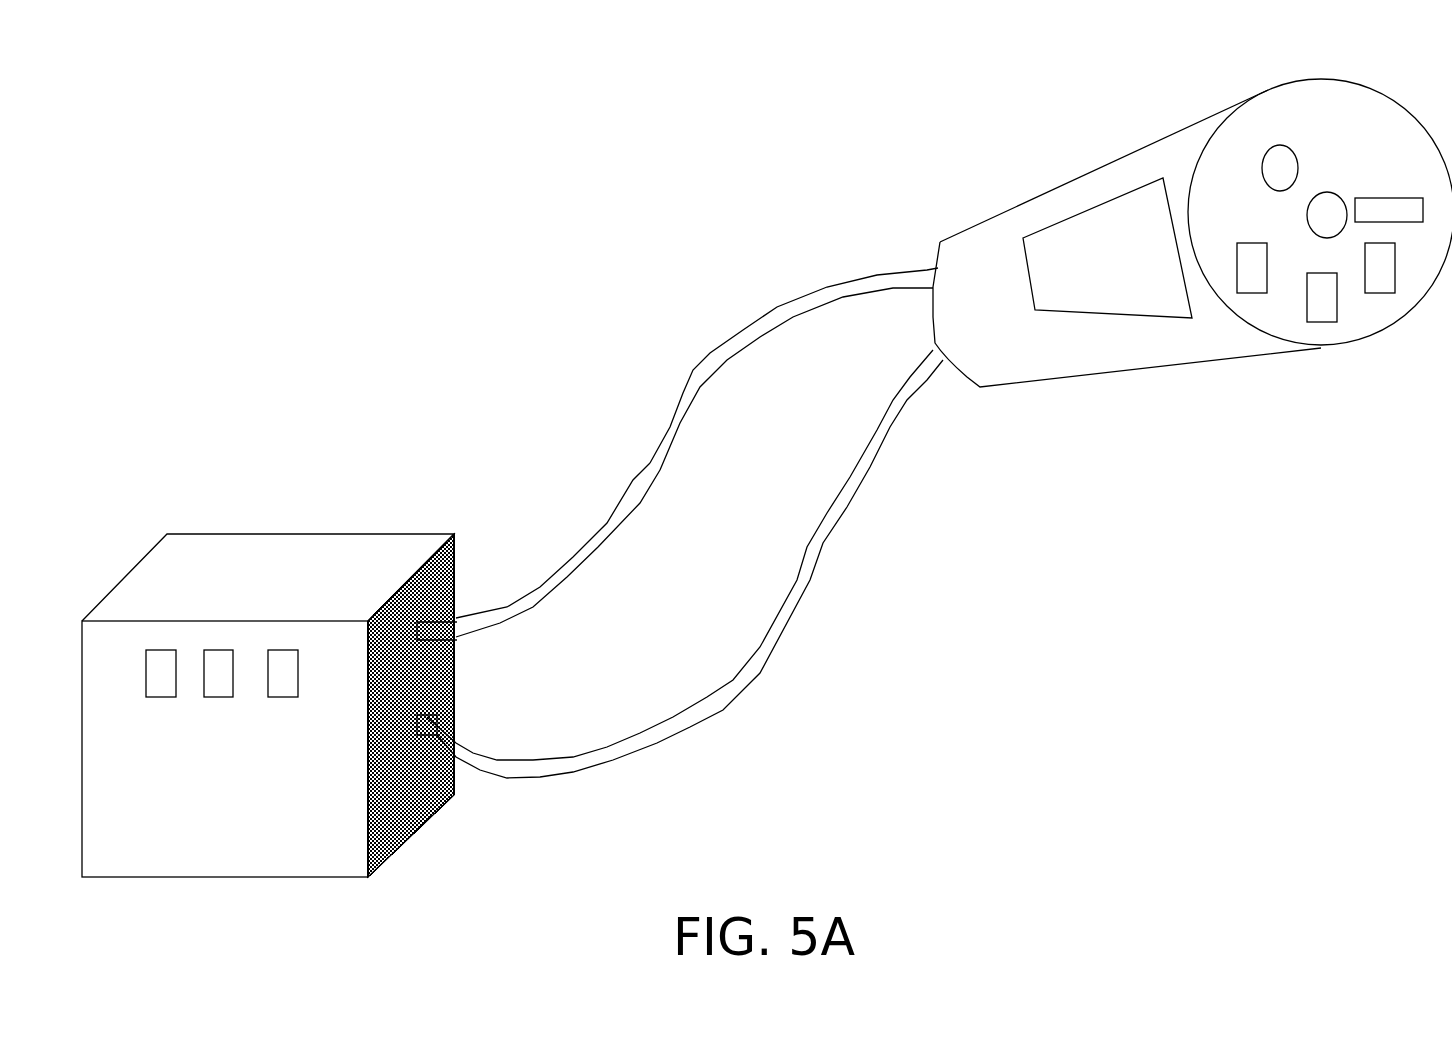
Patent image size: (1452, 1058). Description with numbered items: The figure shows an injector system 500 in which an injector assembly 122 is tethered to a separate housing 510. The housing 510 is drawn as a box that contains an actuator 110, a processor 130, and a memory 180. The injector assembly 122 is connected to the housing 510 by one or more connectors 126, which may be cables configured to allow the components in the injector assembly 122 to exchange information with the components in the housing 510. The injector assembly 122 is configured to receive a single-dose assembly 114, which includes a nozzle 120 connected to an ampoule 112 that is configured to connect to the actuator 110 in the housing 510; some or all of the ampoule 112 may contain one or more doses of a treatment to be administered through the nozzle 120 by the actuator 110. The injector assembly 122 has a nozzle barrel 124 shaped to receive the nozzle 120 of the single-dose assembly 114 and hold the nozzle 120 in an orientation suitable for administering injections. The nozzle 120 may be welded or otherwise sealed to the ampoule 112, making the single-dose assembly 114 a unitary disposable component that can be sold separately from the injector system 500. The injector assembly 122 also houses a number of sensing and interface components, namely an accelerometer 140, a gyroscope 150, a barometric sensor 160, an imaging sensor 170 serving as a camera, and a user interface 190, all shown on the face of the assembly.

The injector system 500 is at (512, 133).
The housing 510 is at (277, 527).
The actuator 110 is at (156, 699).
The processor 130 is at (214, 699).
The memory 180 is at (279, 699).
The ampoule 112 is at (552, 577).
The single-dose assembly 114 is at (723, 322).
The connectors 126 is at (577, 753).
The injector assembly 122 is at (1152, 372).
The user interface 190 is at (1060, 223).
The imaging sensor 170 is at (1278, 140).
The nozzle barrel 124 is at (1325, 192).
The nozzle 120 is at (1403, 197).
The accelerometer 140 is at (1245, 297).
The gyroscope 150 is at (1322, 325).
The barometric sensor 160 is at (1380, 297).